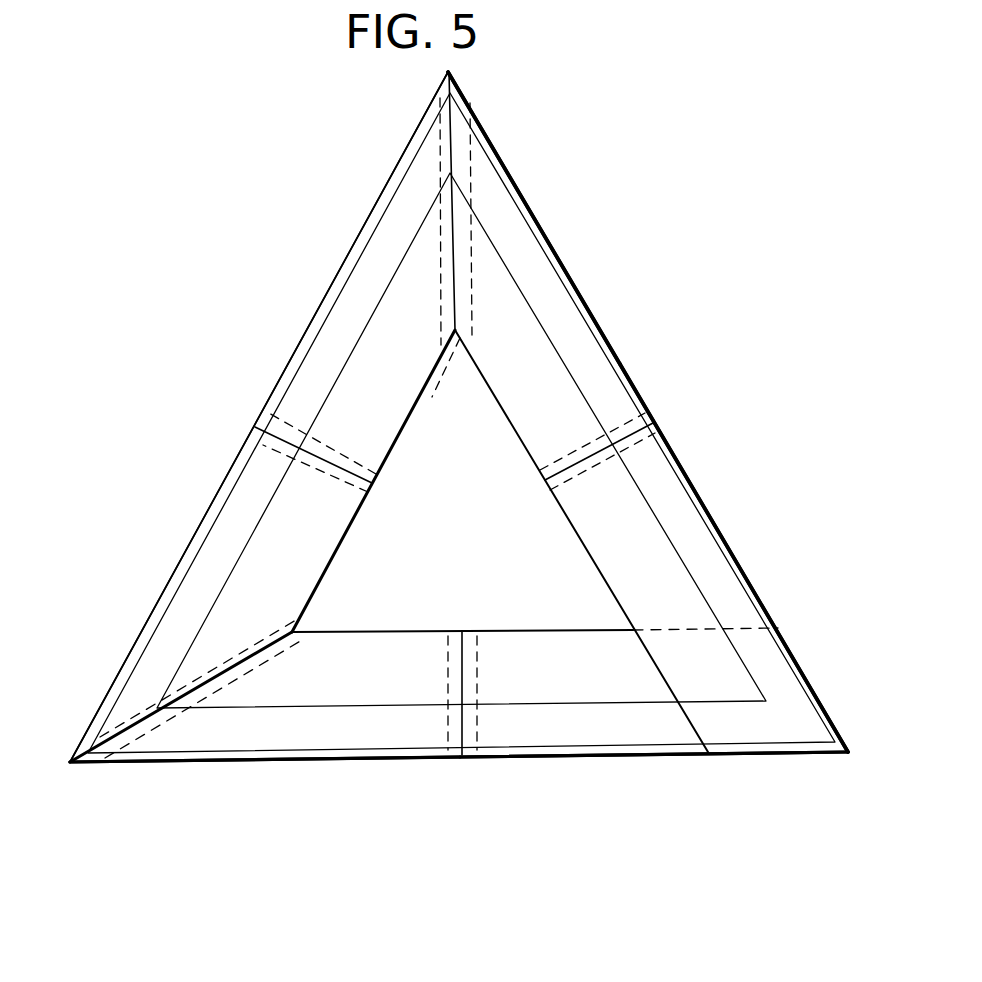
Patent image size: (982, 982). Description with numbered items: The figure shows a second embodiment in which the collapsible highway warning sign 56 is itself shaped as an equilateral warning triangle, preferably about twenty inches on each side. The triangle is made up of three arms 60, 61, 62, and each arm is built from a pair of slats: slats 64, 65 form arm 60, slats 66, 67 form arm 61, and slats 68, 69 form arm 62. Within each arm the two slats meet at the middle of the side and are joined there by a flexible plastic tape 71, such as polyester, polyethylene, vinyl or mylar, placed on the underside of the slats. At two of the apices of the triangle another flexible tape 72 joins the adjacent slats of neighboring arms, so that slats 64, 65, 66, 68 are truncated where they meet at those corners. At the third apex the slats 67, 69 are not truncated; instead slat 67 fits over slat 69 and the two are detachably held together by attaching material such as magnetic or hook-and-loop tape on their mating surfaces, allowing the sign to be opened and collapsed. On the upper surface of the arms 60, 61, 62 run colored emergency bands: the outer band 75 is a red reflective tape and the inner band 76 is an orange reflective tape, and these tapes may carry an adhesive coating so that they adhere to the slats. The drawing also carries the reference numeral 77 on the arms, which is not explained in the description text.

The collapsible highway warning sign 56 is at (452, 74).
The arm 60 is at (226, 354).
The arm 61 is at (648, 333).
The arm 62 is at (466, 793).
The slat 64 is at (352, 228).
The slat 65 is at (192, 528).
The slat 66 is at (574, 268).
The slat 67 is at (740, 556).
The slat 68 is at (230, 770).
The slat 69 is at (659, 764).
The flexible plastic tape 71 is at (373, 486).
The flexible tape 72 is at (452, 345).
The outer band 75 is at (224, 471).
The inner band 76 is at (312, 362).
The inner fold strip 77 is at (372, 443).